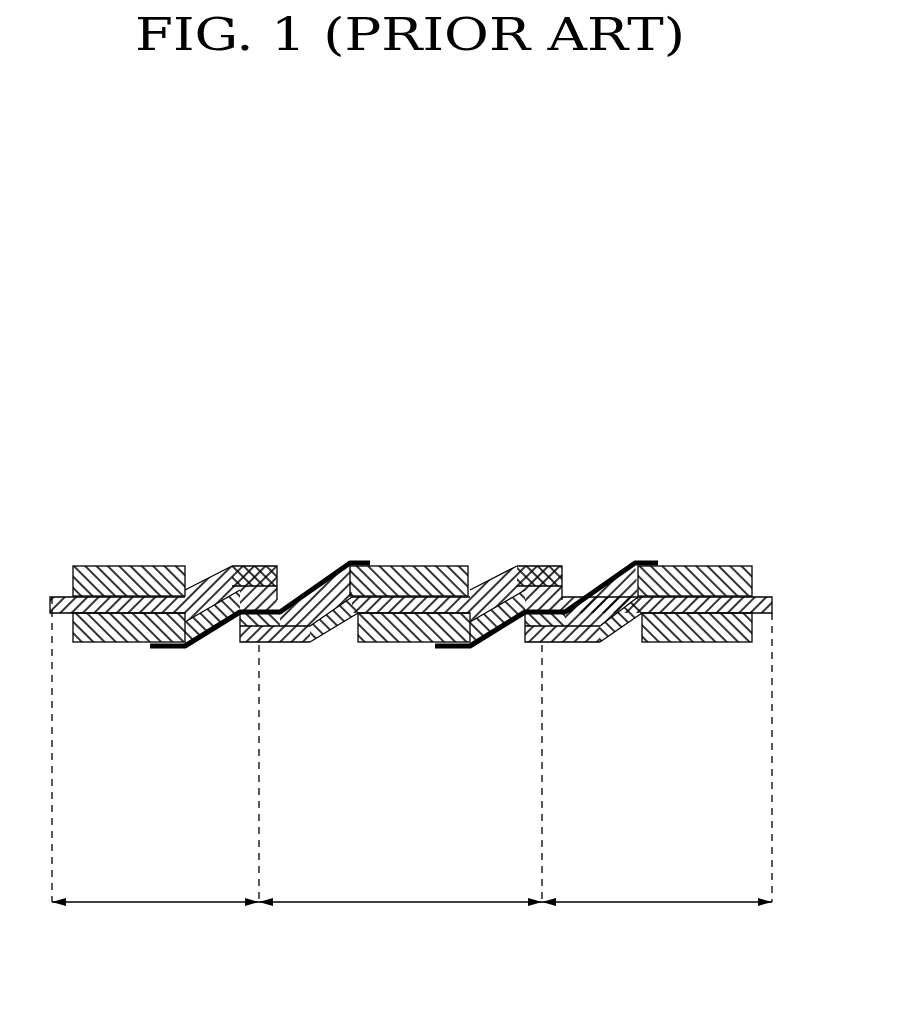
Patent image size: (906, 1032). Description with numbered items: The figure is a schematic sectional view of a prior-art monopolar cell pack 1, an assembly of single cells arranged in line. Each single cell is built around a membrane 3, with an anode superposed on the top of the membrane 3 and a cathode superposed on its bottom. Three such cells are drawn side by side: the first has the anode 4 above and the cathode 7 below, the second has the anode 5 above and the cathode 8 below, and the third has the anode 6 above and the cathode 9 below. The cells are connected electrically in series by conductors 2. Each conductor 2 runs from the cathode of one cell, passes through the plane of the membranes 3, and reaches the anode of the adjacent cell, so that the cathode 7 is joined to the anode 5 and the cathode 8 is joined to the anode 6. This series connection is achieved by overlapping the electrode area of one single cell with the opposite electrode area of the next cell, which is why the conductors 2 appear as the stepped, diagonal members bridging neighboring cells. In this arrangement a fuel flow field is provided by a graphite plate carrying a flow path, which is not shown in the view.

The monopolar cell pack 1 is at (411, 729).
The conductor 2 is at (404, 645).
The membrane 3 is at (247, 566).
The anode 4 is at (132, 566).
The anode 5 is at (432, 565).
The anode 6 is at (707, 565).
The cathode 7 is at (97, 643).
The cathode 8 is at (400, 636).
The cathode 9 is at (700, 636).